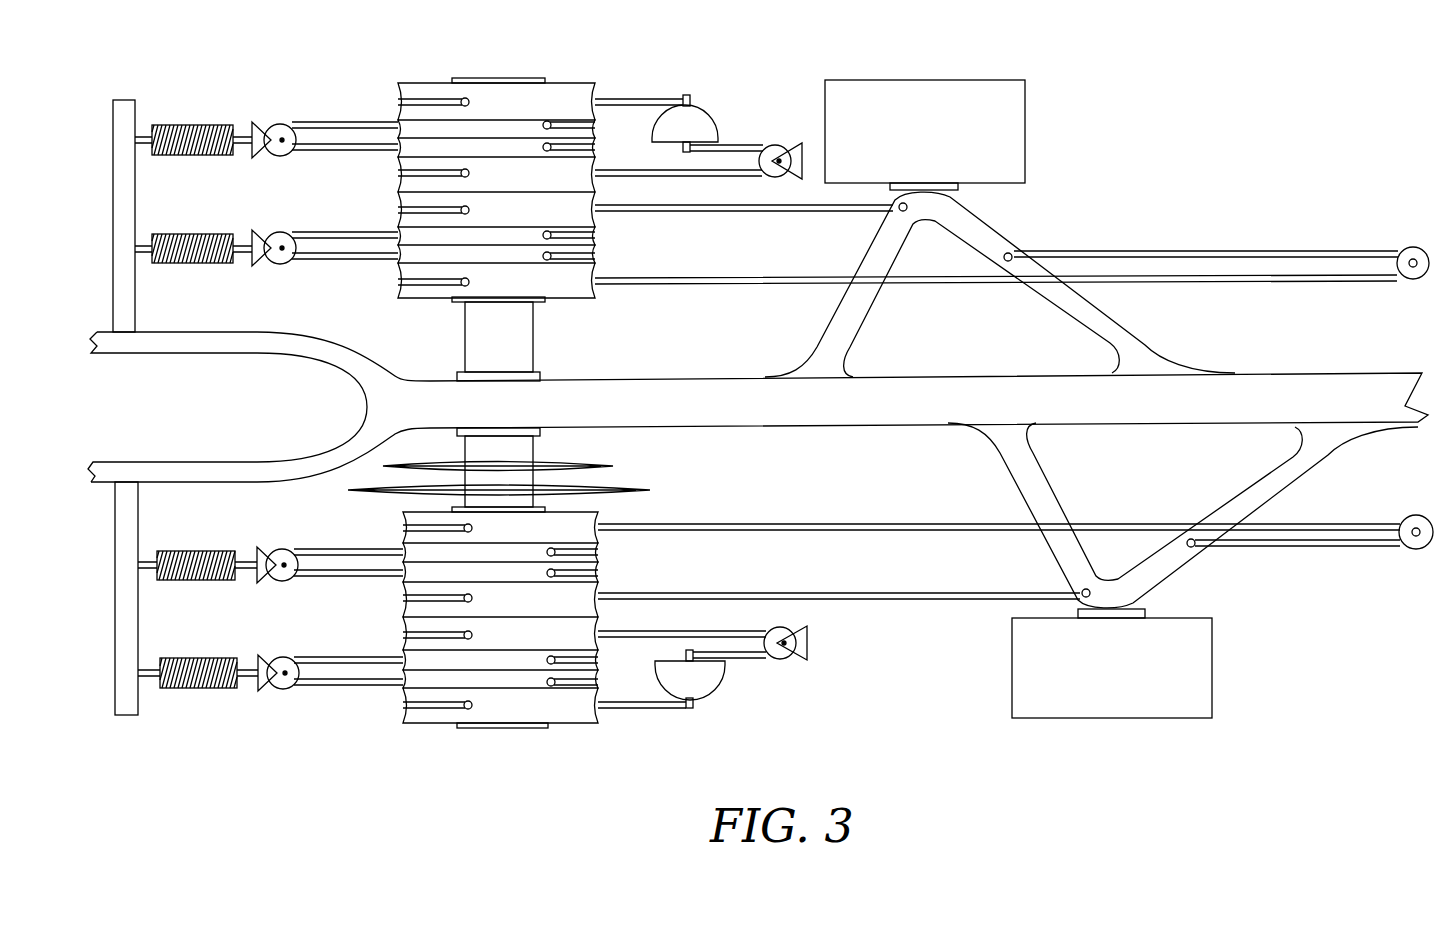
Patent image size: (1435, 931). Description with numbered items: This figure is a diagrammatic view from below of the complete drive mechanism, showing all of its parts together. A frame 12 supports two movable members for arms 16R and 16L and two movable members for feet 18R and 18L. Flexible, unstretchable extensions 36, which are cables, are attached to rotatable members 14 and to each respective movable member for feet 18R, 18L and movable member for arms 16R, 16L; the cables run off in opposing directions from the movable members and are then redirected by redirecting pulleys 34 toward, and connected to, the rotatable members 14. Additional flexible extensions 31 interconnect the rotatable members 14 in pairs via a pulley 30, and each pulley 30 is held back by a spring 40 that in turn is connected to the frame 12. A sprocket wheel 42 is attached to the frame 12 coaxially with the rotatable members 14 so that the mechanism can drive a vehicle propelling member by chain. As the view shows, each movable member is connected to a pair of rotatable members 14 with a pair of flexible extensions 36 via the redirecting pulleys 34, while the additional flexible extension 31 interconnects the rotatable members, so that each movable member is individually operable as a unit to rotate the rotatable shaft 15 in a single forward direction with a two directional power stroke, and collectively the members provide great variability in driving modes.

The frame 12 is at (1365, 383).
The rotatable members 14 is at (485, 729).
The rotatable shaft 15 is at (518, 333).
The movable member for arm 16L is at (707, 112).
The movable member for arm 16R is at (700, 697).
The movable member for foot 18L is at (888, 98).
The movable member for foot 18R is at (1141, 699).
The pulley 30 is at (283, 123).
The additional flexible extension 31 is at (330, 690).
The redirecting pulley 34 is at (1410, 246).
The flexible extension 36 is at (638, 98).
The spring 40 is at (185, 124).
The sprocket wheel 42 is at (645, 463).